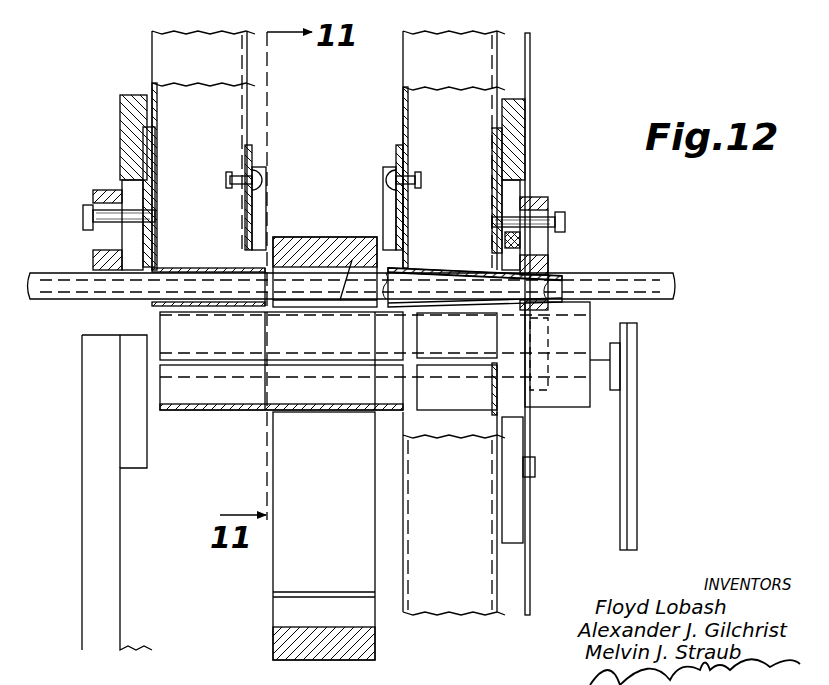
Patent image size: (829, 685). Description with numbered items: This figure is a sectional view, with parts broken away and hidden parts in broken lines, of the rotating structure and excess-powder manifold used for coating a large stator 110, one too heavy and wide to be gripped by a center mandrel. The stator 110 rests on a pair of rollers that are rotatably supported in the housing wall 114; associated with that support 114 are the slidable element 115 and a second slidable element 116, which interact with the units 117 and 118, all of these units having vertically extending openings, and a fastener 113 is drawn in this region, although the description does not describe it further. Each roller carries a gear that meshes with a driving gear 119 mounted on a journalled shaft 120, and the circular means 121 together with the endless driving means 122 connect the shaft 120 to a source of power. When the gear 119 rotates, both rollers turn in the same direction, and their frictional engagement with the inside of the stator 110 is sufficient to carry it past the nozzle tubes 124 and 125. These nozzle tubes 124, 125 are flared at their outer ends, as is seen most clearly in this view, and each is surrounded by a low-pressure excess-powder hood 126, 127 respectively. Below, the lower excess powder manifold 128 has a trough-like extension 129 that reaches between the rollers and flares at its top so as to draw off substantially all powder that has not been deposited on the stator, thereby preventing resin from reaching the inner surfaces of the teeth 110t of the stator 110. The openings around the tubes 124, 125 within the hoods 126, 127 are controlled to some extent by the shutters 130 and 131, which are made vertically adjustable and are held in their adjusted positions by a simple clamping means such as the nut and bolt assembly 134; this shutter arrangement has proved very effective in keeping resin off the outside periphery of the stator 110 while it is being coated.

The stator 110 is at (314, 218).
The teeth of stator 110t is at (352, 260).
The bolt 113 is at (566, 222).
The housing wall 114 is at (538, 118).
The slidable element 115 is at (538, 197).
The second slidable element 116 is at (500, 157).
The unit 117 is at (530, 92).
The unit 118 is at (517, 240).
The driving gear 119 is at (540, 390).
The shaft 120 is at (602, 370).
The circular means 121 is at (637, 343).
The endless driving means 122 is at (637, 437).
The nozzle tube 124 is at (424, 268).
The nozzle tube 125 is at (197, 268).
The excess powder hood 126 is at (425, 108).
The excess powder hood 127 is at (157, 118).
The lower excess powder manifold 128 is at (442, 424).
The trough-like extension 129 is at (196, 410).
The shutter 130 is at (400, 155).
The shutter 131 is at (245, 150).
The nut and bolt assembly 134 is at (418, 180).